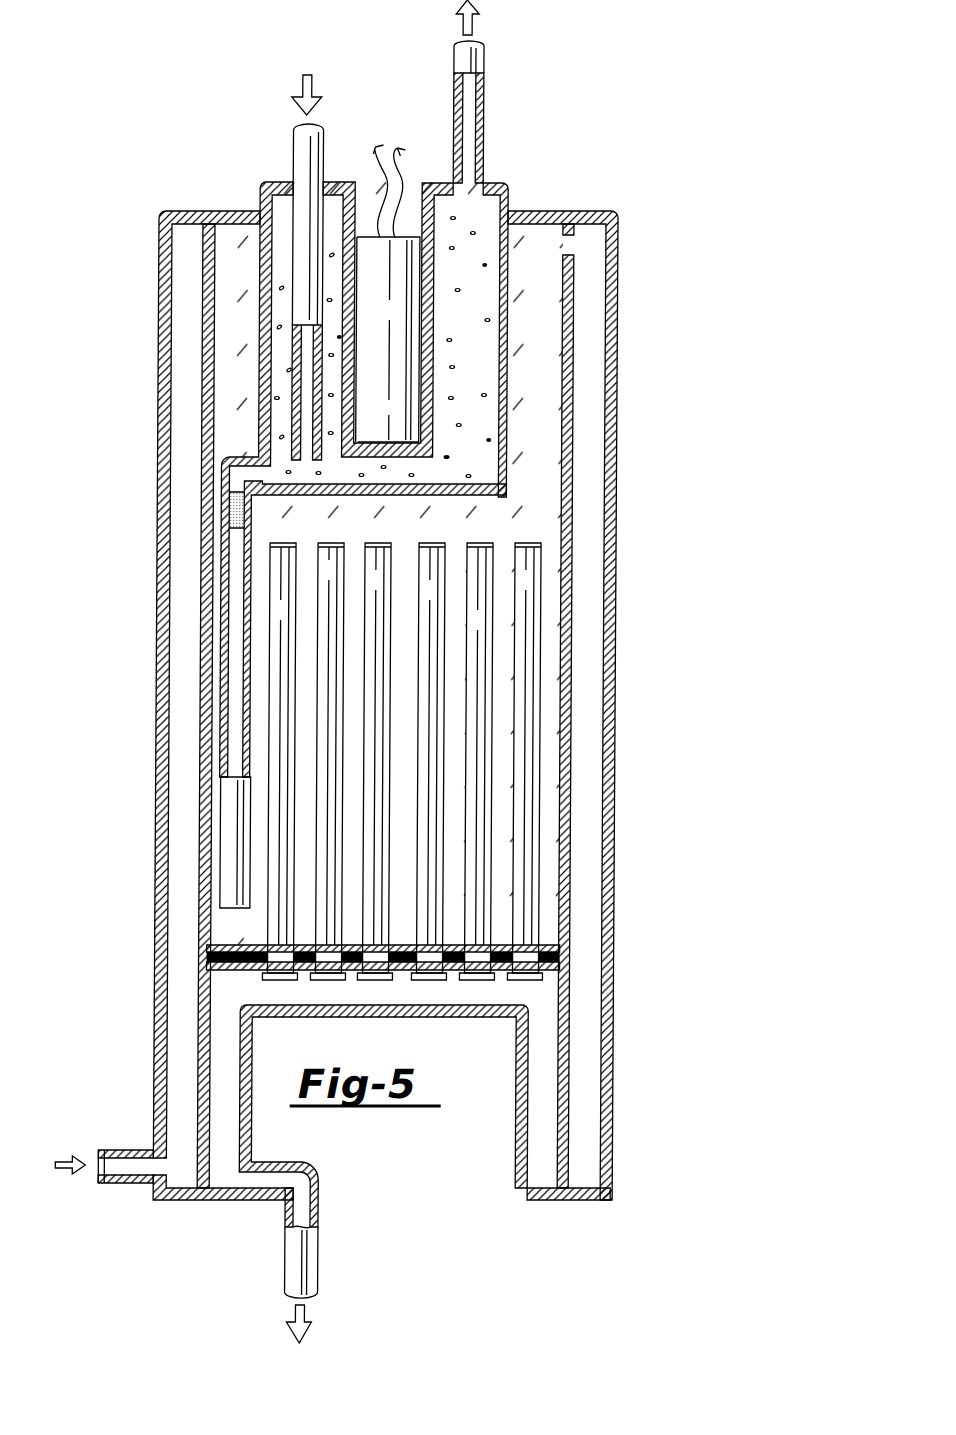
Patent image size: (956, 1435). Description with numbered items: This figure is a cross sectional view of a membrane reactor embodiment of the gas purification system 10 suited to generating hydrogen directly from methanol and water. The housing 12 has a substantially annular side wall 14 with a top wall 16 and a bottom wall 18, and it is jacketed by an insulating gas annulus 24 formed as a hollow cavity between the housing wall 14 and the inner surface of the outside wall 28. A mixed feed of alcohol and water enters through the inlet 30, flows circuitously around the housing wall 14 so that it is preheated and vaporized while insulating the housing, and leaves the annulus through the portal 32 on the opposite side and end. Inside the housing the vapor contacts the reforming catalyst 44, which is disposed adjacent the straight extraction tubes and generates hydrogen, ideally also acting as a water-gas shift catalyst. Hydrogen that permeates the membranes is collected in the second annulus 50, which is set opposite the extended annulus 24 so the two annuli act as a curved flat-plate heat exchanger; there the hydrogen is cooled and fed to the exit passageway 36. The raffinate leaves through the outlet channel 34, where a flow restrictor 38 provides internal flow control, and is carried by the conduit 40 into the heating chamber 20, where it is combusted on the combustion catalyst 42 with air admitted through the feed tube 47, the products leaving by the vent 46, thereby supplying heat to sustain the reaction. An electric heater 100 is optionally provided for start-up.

The gas purification system 10 is at (408, 671).
The housing 12 is at (358, 667).
The side wall 14 is at (201, 857).
The top wall 16 is at (580, 212).
The bottom wall 18 is at (565, 947).
The heating chamber 20 is at (515, 315).
The insulating gas annulus 24 is at (186, 742).
The outside wall 28 is at (162, 537).
The inlet 30 is at (143, 1197).
The portal 32 is at (574, 243).
The outlet channel 34 is at (223, 622).
The passageway 36 is at (324, 1200).
The flow restrictor 38 is at (233, 493).
The conduit 40 is at (243, 457).
The combustion catalyst 42 is at (478, 242).
The reforming catalyst 44 is at (545, 445).
The vent 46 is at (483, 62).
The feed tube 47 is at (323, 150).
The second annulus 50 is at (553, 1122).
The electric heater 100 is at (419, 236).